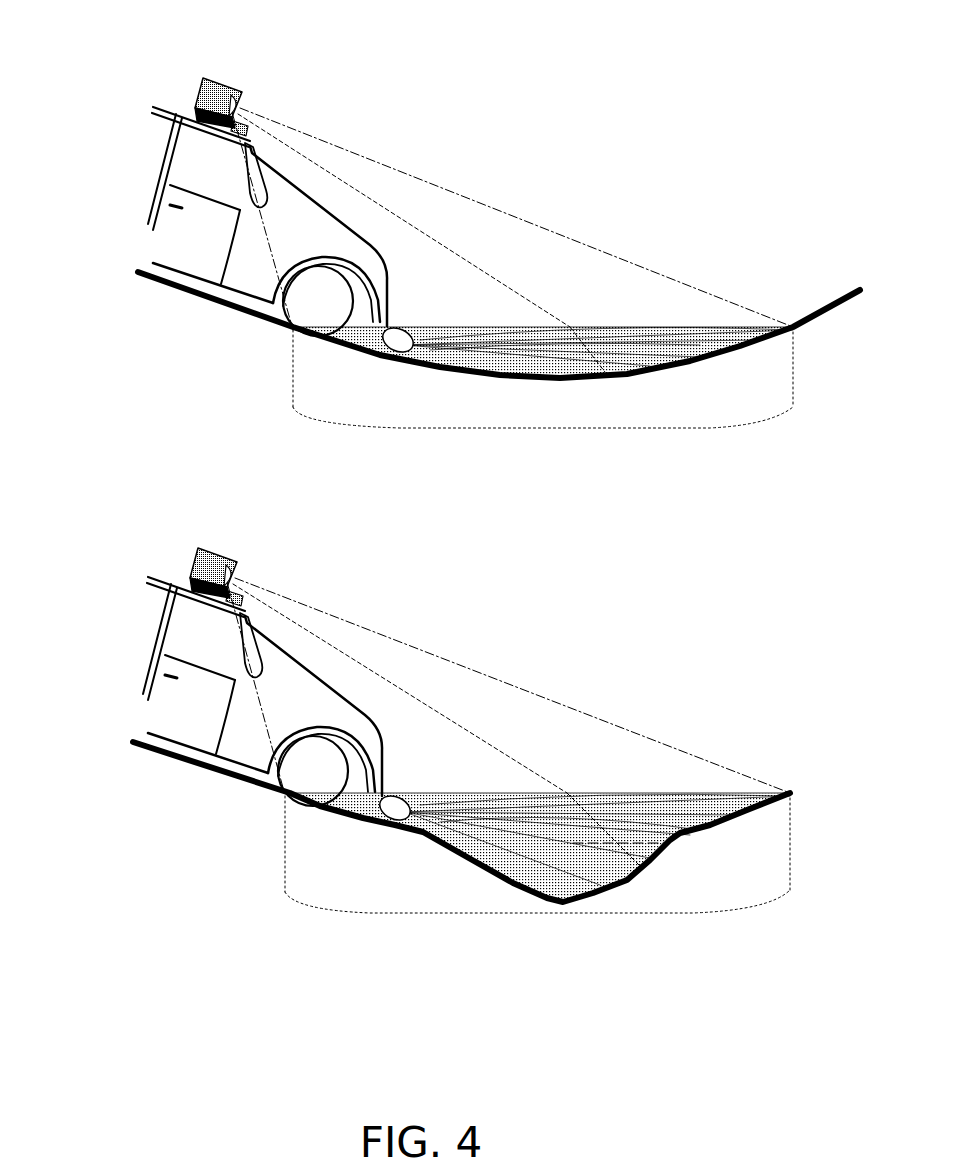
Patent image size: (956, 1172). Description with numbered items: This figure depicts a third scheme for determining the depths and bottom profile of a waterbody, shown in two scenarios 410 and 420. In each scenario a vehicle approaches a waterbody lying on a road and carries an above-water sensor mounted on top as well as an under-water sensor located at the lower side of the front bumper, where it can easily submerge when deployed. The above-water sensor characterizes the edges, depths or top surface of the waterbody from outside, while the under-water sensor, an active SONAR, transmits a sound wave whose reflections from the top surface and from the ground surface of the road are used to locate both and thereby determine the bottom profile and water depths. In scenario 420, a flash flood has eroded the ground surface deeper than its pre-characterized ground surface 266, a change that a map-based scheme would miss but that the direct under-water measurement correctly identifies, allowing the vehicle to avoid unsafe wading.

The scenario 410 is at (135, 42).
The scenario 420 is at (145, 522).
The ground surface 266 is at (558, 848).